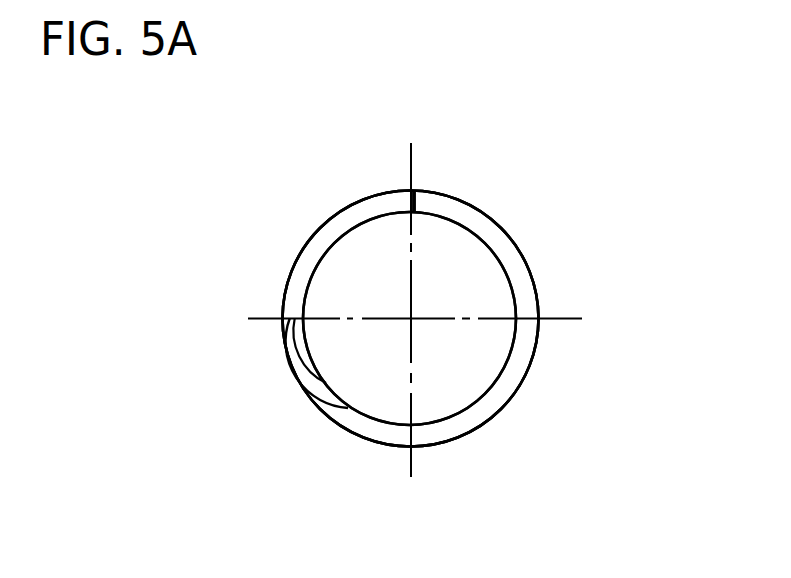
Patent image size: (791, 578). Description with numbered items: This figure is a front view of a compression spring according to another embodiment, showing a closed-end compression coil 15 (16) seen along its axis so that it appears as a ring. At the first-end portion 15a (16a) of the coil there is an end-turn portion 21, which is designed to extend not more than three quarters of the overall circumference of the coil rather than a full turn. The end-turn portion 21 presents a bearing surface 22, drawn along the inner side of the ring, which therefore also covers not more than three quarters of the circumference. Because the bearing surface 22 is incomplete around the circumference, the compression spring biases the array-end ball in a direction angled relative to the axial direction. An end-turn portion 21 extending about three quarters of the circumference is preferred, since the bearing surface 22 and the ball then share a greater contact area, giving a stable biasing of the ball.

The closed-end compression coil 15 is at (495, 208).
The closed-end compression coil 16 is at (477, 277).
The first-end portion 15a is at (332, 226).
The first-end portion 16a is at (285, 162).
The end-turn portion 21 is at (535, 345).
The bearing surface 22 is at (507, 388).